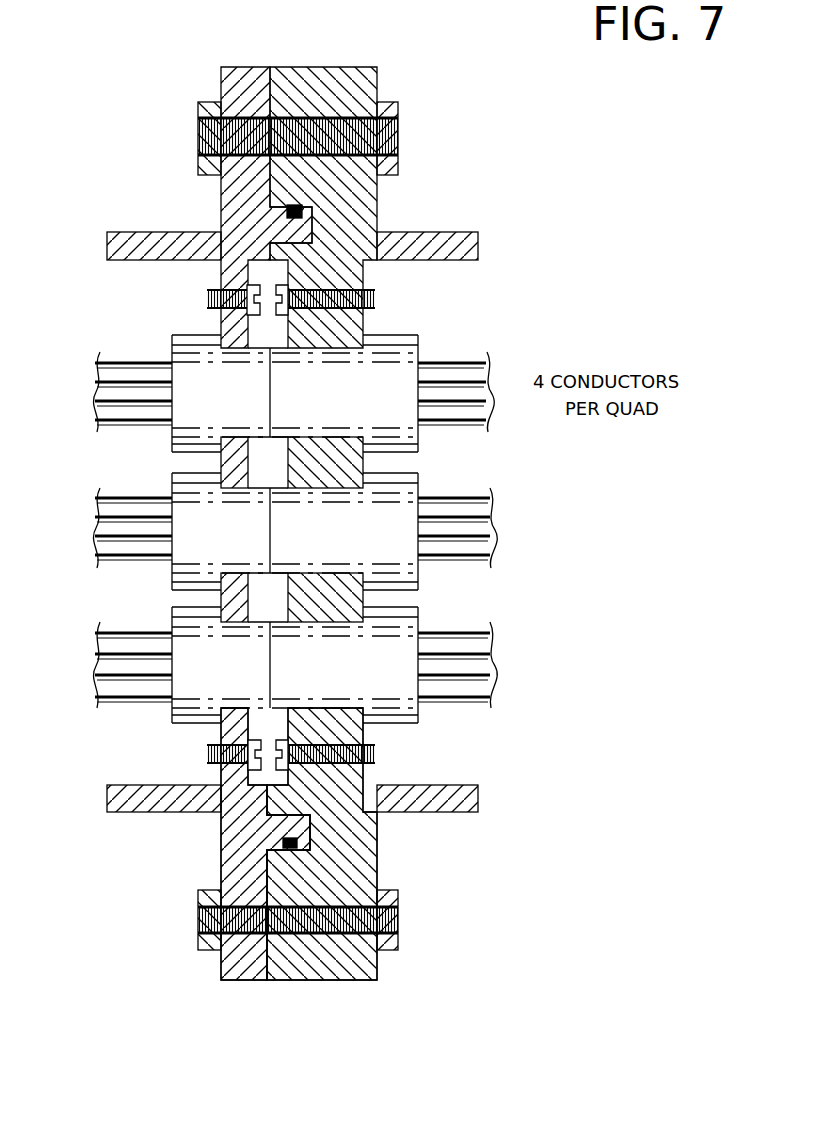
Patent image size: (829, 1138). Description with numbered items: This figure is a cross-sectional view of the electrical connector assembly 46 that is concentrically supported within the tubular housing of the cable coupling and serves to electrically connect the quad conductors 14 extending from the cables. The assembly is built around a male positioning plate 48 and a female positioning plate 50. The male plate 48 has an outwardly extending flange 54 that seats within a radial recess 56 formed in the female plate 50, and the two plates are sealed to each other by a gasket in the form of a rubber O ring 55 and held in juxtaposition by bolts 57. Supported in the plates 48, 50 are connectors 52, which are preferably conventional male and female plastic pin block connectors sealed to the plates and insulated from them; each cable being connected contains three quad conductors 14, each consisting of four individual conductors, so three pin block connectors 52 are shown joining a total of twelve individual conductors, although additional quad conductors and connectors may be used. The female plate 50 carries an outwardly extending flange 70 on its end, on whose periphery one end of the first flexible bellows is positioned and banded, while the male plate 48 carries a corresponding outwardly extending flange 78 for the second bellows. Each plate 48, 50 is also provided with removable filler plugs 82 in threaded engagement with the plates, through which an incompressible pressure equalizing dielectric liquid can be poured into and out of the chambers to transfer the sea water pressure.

The quad conductors 14 is at (106, 343).
The electrical connector assembly 46 is at (439, 125).
The male positioning plate 48 is at (253, 982).
The female positioning plate 50 is at (350, 982).
The connectors 52 is at (180, 334).
The outwardly extending flange 54 is at (285, 228).
The O ring 55 is at (300, 212).
The radial recess 56 is at (312, 225).
The bolts 57 is at (198, 128).
The outwardly extending flange 70 is at (458, 233).
The outwardly extending flange 78 is at (107, 232).
The removable filler plugs 82 is at (207, 297).